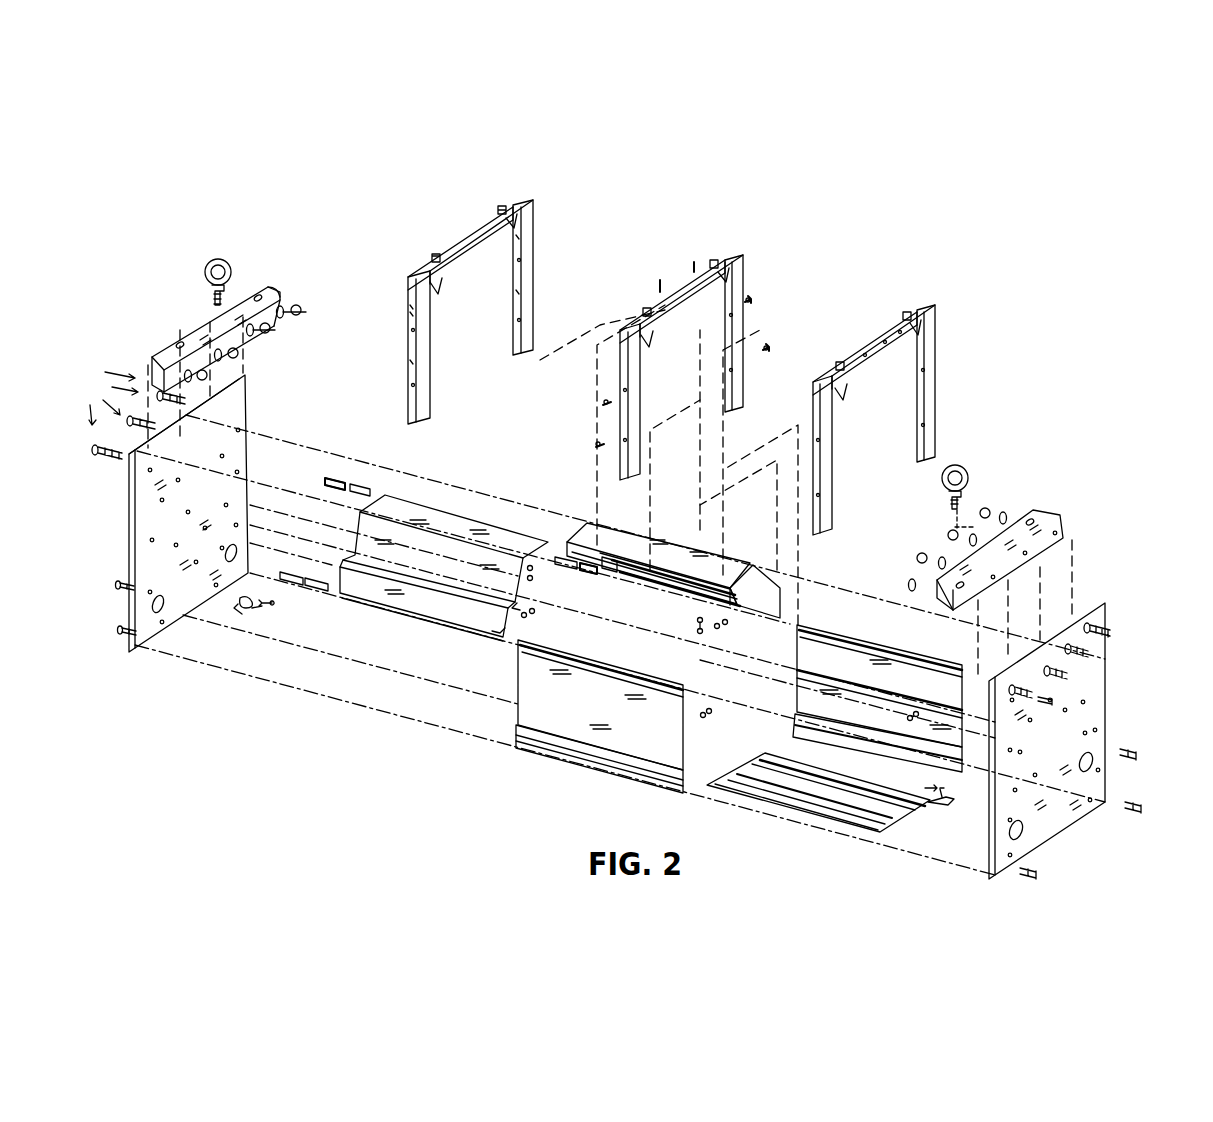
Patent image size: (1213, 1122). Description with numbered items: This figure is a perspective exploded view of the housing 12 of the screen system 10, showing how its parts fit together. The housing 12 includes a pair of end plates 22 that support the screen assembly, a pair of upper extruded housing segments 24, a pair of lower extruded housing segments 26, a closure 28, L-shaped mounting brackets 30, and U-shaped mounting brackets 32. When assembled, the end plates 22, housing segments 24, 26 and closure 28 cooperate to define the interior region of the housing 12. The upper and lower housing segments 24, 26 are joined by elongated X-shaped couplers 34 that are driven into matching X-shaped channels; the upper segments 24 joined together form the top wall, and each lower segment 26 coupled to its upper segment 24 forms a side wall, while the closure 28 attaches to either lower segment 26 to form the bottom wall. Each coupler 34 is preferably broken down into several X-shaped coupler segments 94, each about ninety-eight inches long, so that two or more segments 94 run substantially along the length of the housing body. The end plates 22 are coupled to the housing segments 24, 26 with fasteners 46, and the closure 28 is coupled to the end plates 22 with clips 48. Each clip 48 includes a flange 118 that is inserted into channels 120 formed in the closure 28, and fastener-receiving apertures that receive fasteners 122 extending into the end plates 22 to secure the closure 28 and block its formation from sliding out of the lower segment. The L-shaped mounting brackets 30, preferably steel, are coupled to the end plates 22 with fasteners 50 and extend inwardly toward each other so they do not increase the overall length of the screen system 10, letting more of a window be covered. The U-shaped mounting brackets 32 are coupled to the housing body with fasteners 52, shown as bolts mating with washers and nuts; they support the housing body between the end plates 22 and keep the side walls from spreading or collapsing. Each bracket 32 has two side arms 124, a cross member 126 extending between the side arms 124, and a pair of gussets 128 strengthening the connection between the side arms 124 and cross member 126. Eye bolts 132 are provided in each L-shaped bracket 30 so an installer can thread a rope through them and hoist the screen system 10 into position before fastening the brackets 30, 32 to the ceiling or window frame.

The screen system 10 is at (1040, 266).
The housing 12 is at (1015, 450).
The end plates 22 is at (140, 510).
The upper extruded housing segments 24 is at (408, 598).
The lower extruded housing segments 26 is at (590, 740).
The closure 28 is at (855, 820).
The L-shaped mounting brackets 30 is at (268, 263).
The U-shaped mounting brackets 32 is at (696, 364).
The couplers 34 is at (346, 462).
The fasteners 46 is at (1107, 646).
The clips 48 is at (250, 618).
The fasteners 50 is at (107, 394).
The fasteners 52 is at (772, 334).
The coupler segments 94 is at (365, 475).
The flange 118 is at (255, 607).
The channels 120 is at (770, 753).
The fasteners 122 is at (272, 576).
The side arms 124 is at (420, 360).
The cross member 126 is at (868, 345).
The gussets 128 is at (914, 336).
The eye bolts 132 is at (228, 237).